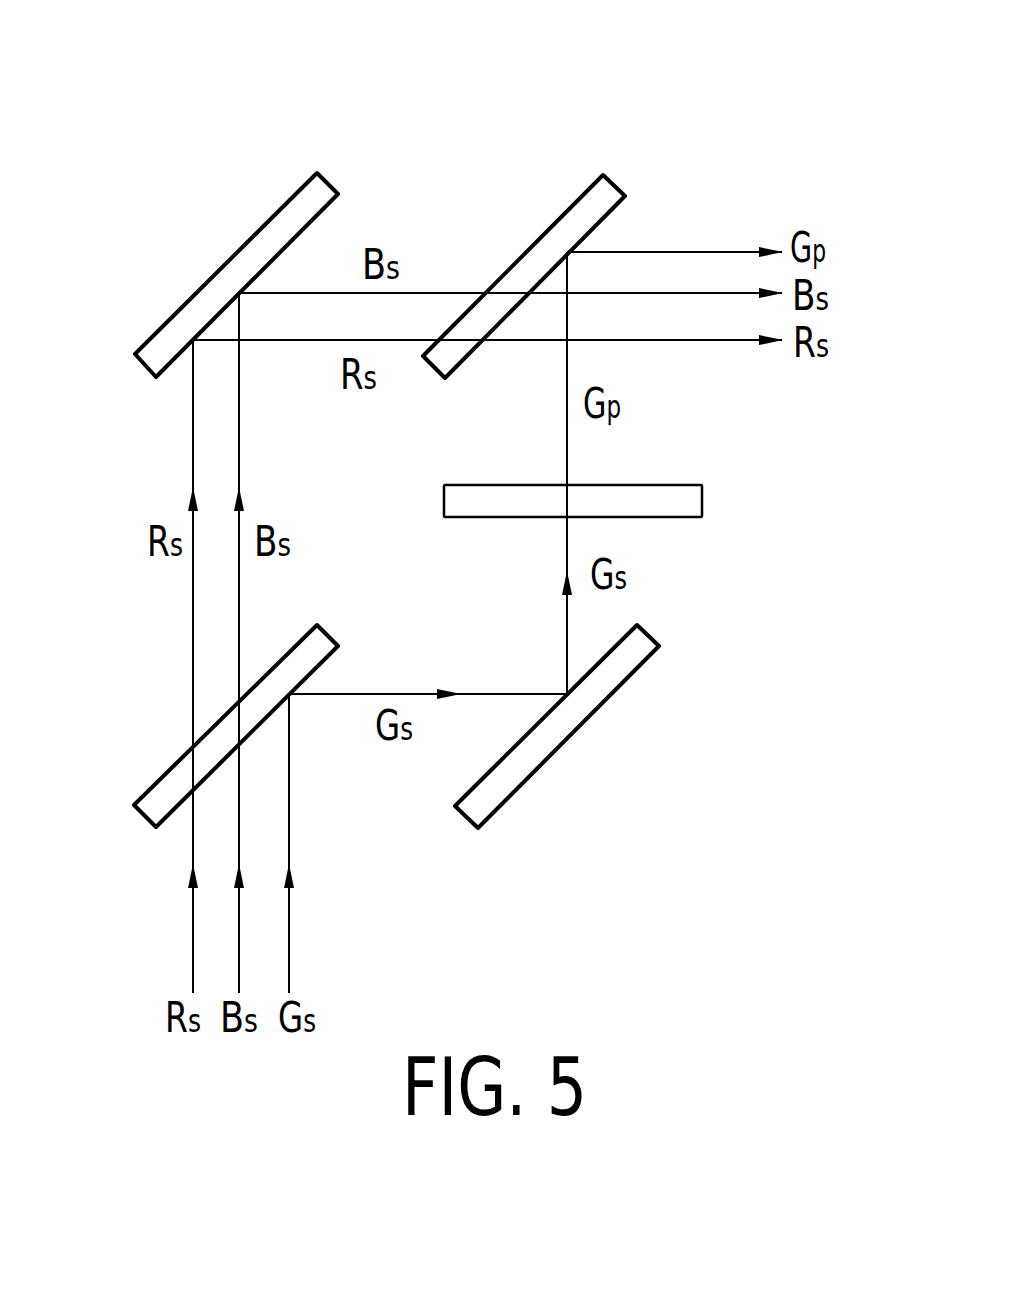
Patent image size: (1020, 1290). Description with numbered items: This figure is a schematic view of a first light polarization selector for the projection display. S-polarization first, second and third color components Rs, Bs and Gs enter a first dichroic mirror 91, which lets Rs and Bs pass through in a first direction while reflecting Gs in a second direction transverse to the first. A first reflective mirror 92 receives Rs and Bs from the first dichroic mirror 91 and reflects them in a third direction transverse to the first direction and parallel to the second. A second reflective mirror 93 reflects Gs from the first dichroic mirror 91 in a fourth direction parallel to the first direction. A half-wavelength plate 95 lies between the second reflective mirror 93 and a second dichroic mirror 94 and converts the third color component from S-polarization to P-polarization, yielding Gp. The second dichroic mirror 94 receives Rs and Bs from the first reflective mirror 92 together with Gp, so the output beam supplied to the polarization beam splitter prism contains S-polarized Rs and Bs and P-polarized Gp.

The first dichroic mirror 91 is at (175, 787).
The first reflective mirror 92 is at (313, 172).
The second reflective mirror 93 is at (610, 687).
The second dichroic mirror 94 is at (603, 175).
The half-wavelength plate 95 is at (698, 483).